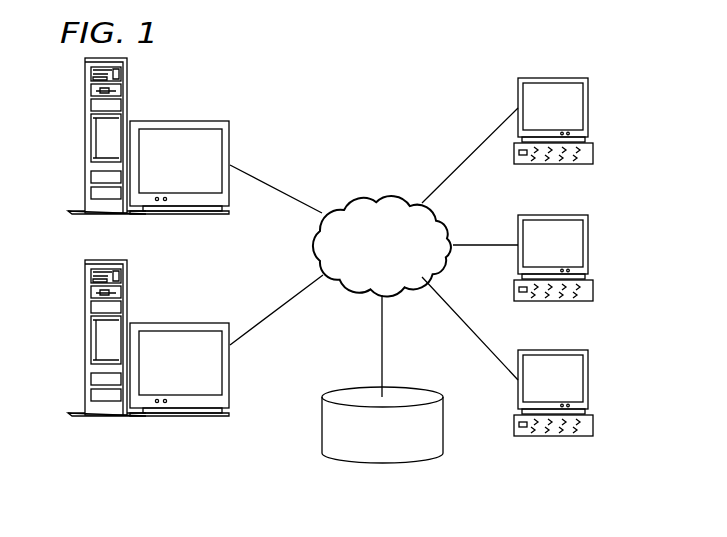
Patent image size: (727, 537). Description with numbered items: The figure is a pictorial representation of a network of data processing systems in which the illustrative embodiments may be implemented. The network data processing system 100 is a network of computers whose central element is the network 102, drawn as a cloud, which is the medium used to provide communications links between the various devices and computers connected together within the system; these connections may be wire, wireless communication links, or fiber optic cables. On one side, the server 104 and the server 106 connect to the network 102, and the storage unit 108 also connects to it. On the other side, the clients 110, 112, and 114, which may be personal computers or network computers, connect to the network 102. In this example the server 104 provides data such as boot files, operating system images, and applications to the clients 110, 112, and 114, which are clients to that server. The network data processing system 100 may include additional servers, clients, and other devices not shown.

The network data processing system 100 is at (431, 86).
The network 102 is at (353, 200).
The server 104 is at (85, 135).
The server 106 is at (85, 337).
The storage unit 108 is at (365, 469).
The client 110 is at (588, 108).
The client 112 is at (588, 245).
The client 114 is at (588, 380).